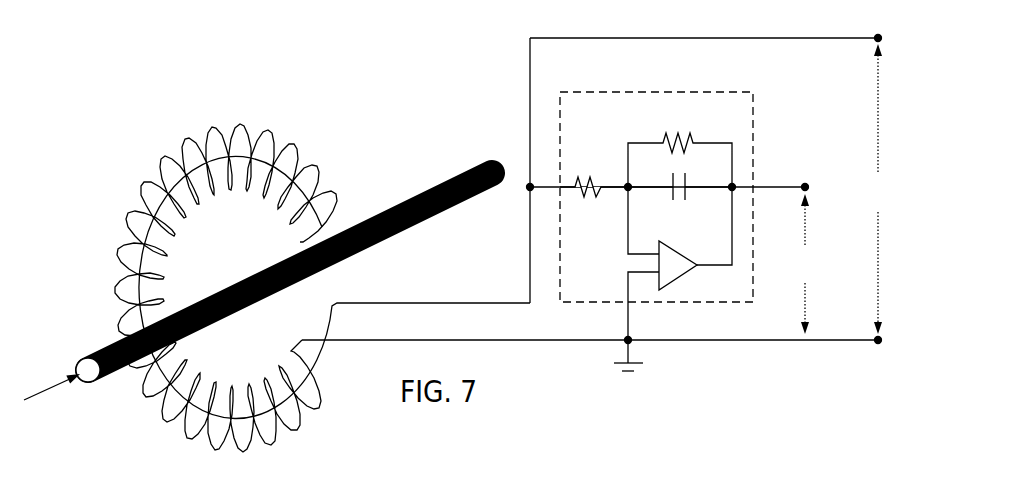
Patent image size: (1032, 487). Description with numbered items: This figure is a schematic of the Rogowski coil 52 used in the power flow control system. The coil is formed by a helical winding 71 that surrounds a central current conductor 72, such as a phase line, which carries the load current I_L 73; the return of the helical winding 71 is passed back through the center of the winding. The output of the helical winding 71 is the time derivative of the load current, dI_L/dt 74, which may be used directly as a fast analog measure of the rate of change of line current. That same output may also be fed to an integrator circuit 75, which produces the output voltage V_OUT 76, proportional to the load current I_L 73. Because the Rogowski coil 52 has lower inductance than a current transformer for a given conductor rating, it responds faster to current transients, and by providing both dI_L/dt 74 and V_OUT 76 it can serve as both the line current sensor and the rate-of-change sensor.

The Rogowski coil 52 is at (145, 131).
The helical winding 71 is at (260, 428).
The central current conductor 72 is at (413, 193).
The load current 73 is at (68, 430).
The time derivative of load current output 74 is at (887, 178).
The integrator circuit 75 is at (608, 92).
The output voltage 76 is at (813, 250).